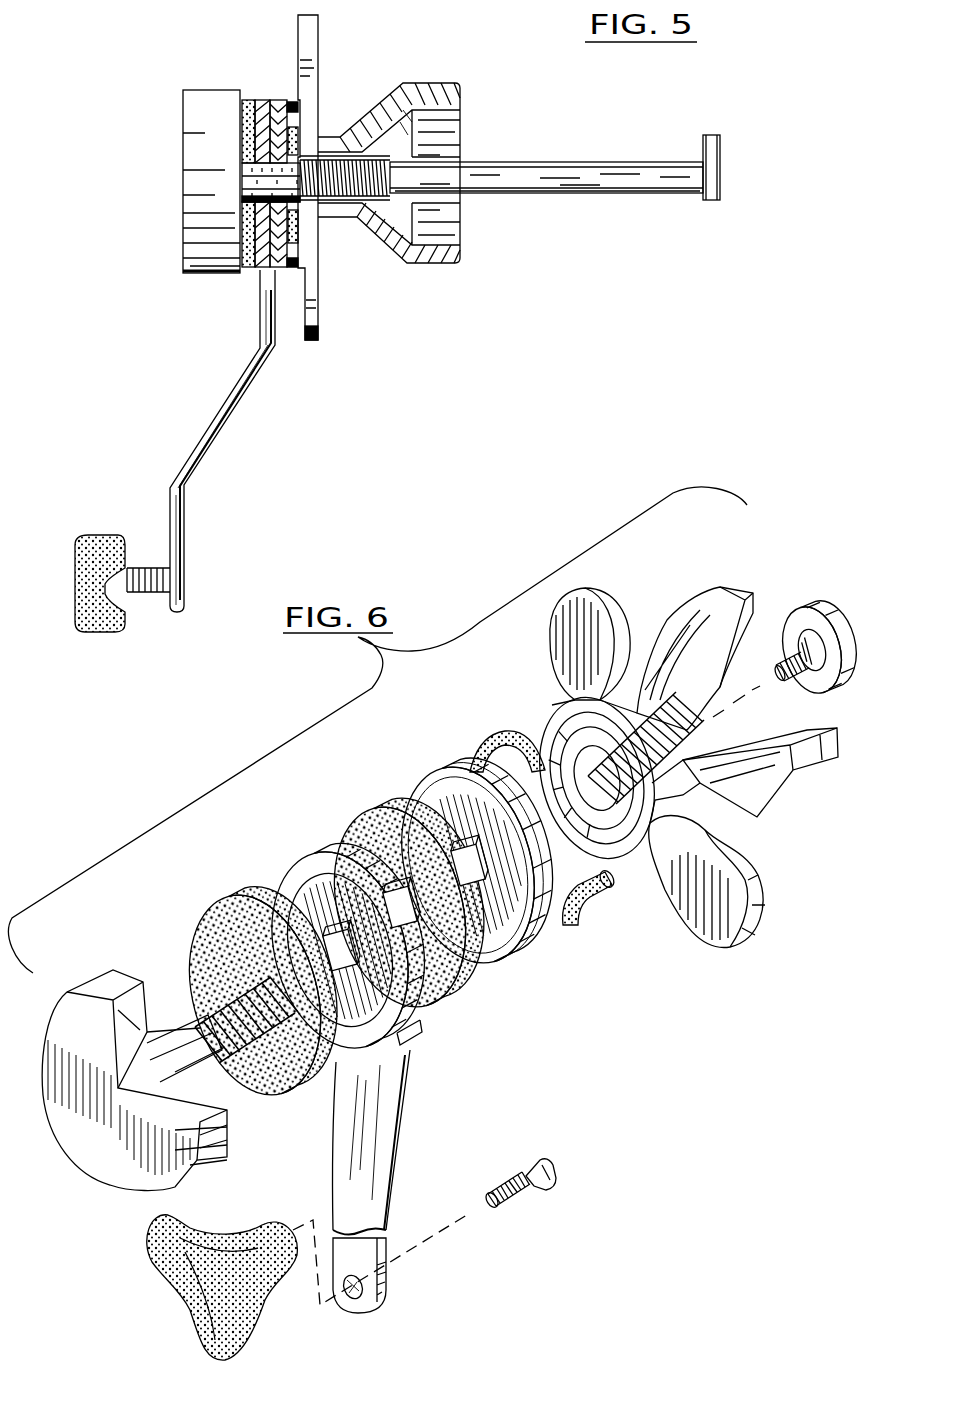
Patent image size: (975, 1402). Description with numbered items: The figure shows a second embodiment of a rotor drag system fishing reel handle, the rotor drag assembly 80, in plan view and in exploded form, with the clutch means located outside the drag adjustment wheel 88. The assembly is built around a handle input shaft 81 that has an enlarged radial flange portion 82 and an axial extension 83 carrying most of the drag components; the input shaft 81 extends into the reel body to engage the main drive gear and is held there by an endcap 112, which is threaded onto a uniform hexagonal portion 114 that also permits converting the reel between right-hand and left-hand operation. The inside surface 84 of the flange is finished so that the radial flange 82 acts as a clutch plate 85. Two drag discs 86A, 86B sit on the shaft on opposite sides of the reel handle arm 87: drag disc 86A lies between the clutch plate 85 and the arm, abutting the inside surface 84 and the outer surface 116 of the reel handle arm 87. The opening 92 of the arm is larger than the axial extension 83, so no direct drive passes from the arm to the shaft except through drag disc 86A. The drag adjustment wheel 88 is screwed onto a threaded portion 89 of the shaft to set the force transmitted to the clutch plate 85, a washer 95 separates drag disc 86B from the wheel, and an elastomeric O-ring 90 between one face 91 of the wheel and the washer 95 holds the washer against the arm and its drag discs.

In FIG. 5, the rotor drag assembly 80 is at (176, 190).
In FIG. 6, the rotor drag assembly 80 is at (303, 733).
In FIG. 5, the handle input shaft 81 is at (666, 160).
In FIG. 6, the handle input shaft 81 is at (470, 832).
In FIG. 5, the enlarged radial flange portion 82 is at (190, 158).
In FIG. 6, the enlarged radial flange portion 82 is at (17, 1153).
In FIG. 5, the axial extension 83 is at (244, 165).
In FIG. 6, the axial extension 83 is at (212, 1084).
In FIG. 5, the inside surface 84 is at (244, 110).
In FIG. 6, the inside surface 84 is at (226, 1150).
In FIG. 5, the clutch plate 85 is at (256, 100).
In FIG. 6, the clutch plate 85 is at (150, 1002).
In FIG. 5, the drag disc 86A is at (259, 270).
In FIG. 6, the drag disc 86A is at (270, 902).
In FIG. 5, the drag disc 86B is at (278, 270).
In FIG. 6, the drag disc 86B is at (464, 1000).
In FIG. 5, the reel handle arm 87 is at (169, 508).
In FIG. 6, the reel handle arm 87 is at (345, 1172).
In FIG. 5, the drag adjustment wheel 88 is at (436, 80).
In FIG. 6, the drag adjustment wheel 88 is at (762, 775).
In FIG. 5, the threaded portion 89 is at (348, 205).
In FIG. 6, the threaded portion 89 is at (280, 1090).
In FIG. 5, the elastomeric O-ring 90 is at (304, 106).
In FIG. 6, the elastomeric O-ring 90 is at (512, 733).
In FIG. 5, the face 91 is at (298, 27).
In FIG. 6, the face 91 is at (626, 795).
In FIG. 5, the opening 92 is at (243, 206).
In FIG. 6, the opening 92 is at (399, 1036).
In FIG. 5, the washer 95 is at (310, 333).
In FIG. 6, the washer 95 is at (536, 960).
In FIG. 5, the endcap 112 is at (720, 168).
In FIG. 6, the endcap 112 is at (832, 594).
In FIG. 5, the hexagonal portion 114 is at (563, 193).
In FIG. 6, the hexagonal portion 114 is at (498, 922).
In FIG. 6, the outer surface 116 is at (338, 878).